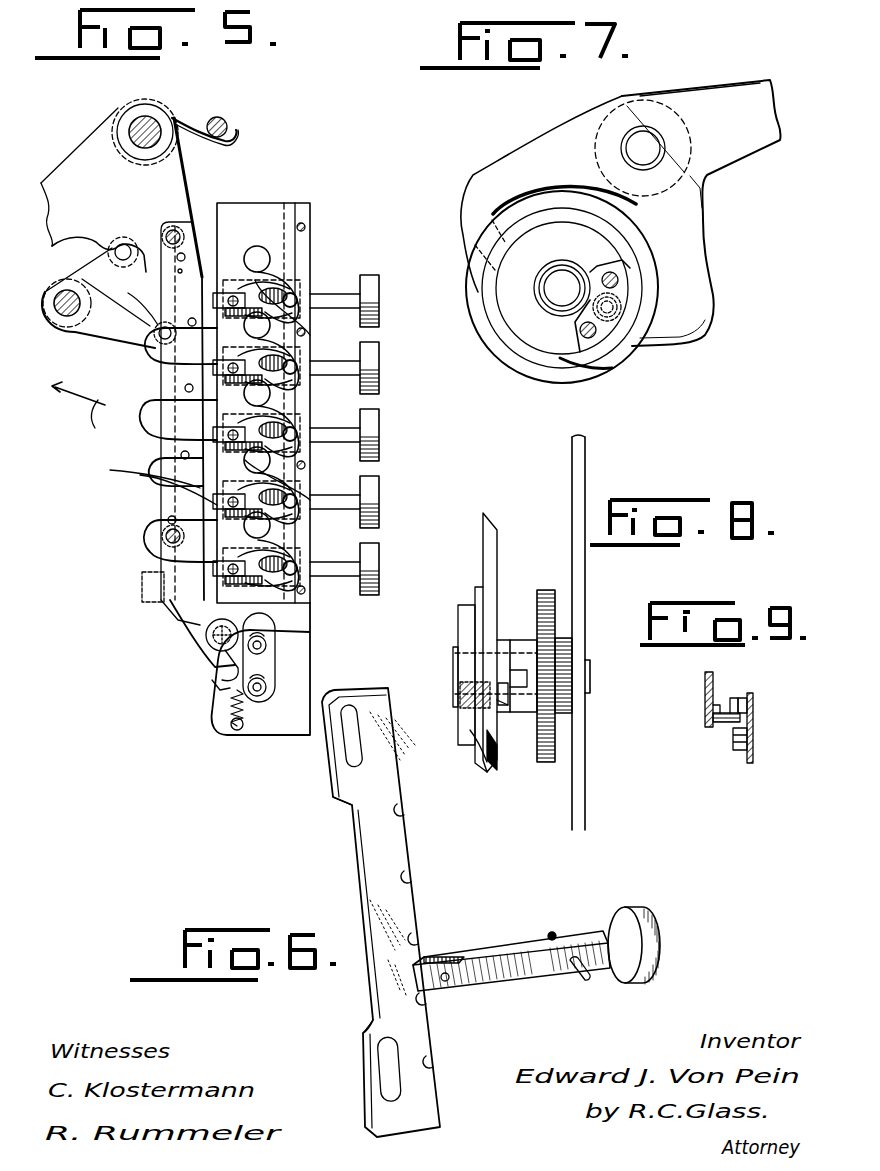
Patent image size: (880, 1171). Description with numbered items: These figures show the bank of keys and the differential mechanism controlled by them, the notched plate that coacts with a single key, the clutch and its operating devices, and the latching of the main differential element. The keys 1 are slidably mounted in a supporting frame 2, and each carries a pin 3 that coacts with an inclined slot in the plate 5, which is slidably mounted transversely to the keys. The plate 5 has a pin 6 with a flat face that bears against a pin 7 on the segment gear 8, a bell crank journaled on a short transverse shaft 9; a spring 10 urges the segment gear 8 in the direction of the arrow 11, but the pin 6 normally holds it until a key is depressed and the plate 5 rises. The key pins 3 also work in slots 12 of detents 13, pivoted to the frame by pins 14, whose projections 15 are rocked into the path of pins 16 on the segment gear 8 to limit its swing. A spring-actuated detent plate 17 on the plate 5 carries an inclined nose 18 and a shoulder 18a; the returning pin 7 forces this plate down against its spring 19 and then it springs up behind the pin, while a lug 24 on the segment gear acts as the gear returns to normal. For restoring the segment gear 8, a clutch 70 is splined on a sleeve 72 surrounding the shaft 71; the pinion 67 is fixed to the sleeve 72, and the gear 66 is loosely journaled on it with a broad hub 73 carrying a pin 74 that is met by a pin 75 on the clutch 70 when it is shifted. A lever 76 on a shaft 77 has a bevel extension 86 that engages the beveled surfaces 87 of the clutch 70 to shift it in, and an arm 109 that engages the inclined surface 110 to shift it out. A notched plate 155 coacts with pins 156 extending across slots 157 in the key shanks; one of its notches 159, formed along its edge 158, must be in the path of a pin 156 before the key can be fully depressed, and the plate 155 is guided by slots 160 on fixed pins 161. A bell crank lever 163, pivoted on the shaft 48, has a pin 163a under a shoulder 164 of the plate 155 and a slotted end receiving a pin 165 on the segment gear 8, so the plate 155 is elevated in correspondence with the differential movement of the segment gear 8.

In FIG. 5, the key 1 is at (375, 298).
In FIG. 6, the key 1 is at (602, 935).
In FIG. 5, the supporting frame 2 is at (266, 210).
In FIG. 5, the pin 3 is at (298, 296).
In FIG. 6, the pin 3 is at (556, 935).
In FIG. 9, the plate 5 is at (753, 732).
In FIG. 5, the pin 6 is at (214, 628).
In FIG. 9, the pin 6 is at (734, 698).
In FIG. 5, the pin 7 is at (212, 636).
In FIG. 9, the pin 7 is at (725, 723).
In FIG. 5, the segment gear 8 is at (72, 176).
In FIG. 9, the segment gear 8 is at (705, 688).
In FIG. 5, the short transverse shaft 9 is at (152, 124).
In FIG. 5, the spring 10 is at (200, 125).
In FIG. 5, the arrow 11 is at (84, 411).
In FIG. 5, the slot 12 is at (286, 366).
In FIG. 5, the detent 13 is at (278, 340).
In FIG. 5, the pin 14 is at (262, 280).
In FIG. 5, the projection 15 is at (145, 410).
In FIG. 5, the pin 16 is at (185, 388).
In FIG. 5, the detent plate 17 is at (272, 660).
In FIG. 9, the detent plate 17 is at (740, 752).
In FIG. 5, the inclined nose 18 is at (228, 662).
In FIG. 9, the inclined nose 18 is at (745, 700).
In FIG. 5, the shoulder 18a is at (225, 690).
In FIG. 5, the spring 19 is at (232, 718).
In FIG. 5, the lug 24 is at (142, 590).
In FIG. 8, the lug 24 is at (505, 690).
In FIG. 5, the shaft 48 is at (61, 294).
In FIG. 8, the gear 66 is at (545, 590).
In FIG. 8, the pinion 67 is at (565, 655).
In FIG. 7, the clutch 70 is at (517, 322).
In FIG. 8, the clutch 70 is at (492, 740).
In FIG. 7, the shaft 71 is at (562, 268).
In FIG. 8, the shaft 71 is at (592, 676).
In FIG. 7, the sleeve 72 is at (560, 308).
In FIG. 8, the sleeve 72 is at (500, 660).
In FIG. 8, the hub 73 is at (528, 648).
In FIG. 7, the pin 74 is at (618, 290).
In FIG. 7, the pin 75 is at (612, 312).
In FIG. 8, the pin 75 is at (500, 705).
In FIG. 7, the lever 76 is at (725, 95).
In FIG. 8, the lever 76 is at (490, 528).
In FIG. 7, the shaft 77 is at (655, 145).
In FIG. 7, the bevel extension 86 is at (708, 318).
In FIG. 8, the bevel extension 86 is at (470, 717).
In FIG. 7, the beveled surface 87 is at (604, 372).
In FIG. 8, the beveled surface 87 is at (485, 750).
In FIG. 7, the arm 109 is at (510, 167).
In FIG. 8, the arm 109 is at (492, 650).
In FIG. 8, the inclined surface 110 is at (489, 590).
In FIG. 5, the notched plate 155 is at (205, 215).
In FIG. 6, the notched plate 155 is at (368, 878).
In FIG. 5, the pin 156 is at (247, 294).
In FIG. 6, the pin 156 is at (447, 982).
In FIG. 6, the slot 157 is at (447, 957).
In FIG. 6, the edge 158 is at (418, 905).
In FIG. 5, the notch 159 is at (140, 475).
In FIG. 6, the notch 159 is at (412, 880).
In FIG. 5, the slot 160 is at (256, 258).
In FIG. 6, the slot 160 is at (340, 735).
In FIG. 5, the fixed pin 161 is at (169, 231).
In FIG. 5, the bell crank lever 163 is at (105, 335).
In FIG. 5, the pin 163a is at (157, 328).
In FIG. 5, the shoulder 164 is at (158, 328).
In FIG. 6, the shoulder 164 is at (334, 800).
In FIG. 5, the pin 165 is at (121, 244).